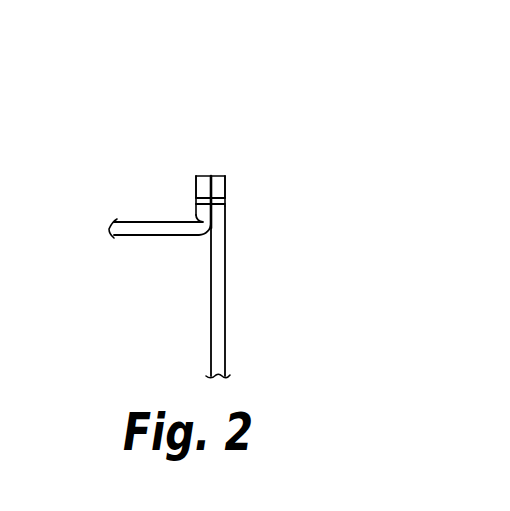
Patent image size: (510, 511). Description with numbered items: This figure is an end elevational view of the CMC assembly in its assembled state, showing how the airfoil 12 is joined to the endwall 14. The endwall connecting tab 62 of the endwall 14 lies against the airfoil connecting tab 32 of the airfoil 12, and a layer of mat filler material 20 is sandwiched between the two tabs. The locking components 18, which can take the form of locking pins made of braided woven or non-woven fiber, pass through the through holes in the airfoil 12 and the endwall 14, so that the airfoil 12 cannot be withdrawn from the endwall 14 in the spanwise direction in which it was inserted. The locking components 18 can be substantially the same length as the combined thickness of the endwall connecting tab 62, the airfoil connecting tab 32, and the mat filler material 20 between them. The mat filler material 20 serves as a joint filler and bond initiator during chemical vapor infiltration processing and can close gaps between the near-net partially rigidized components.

The airfoil 12 is at (200, 337).
The endwall 14 is at (170, 248).
The locking components 18 is at (227, 201).
The mat filler material 20 is at (208, 166).
The airfoil connecting tab 32 is at (219, 176).
The endwall connecting tab 62 is at (197, 176).